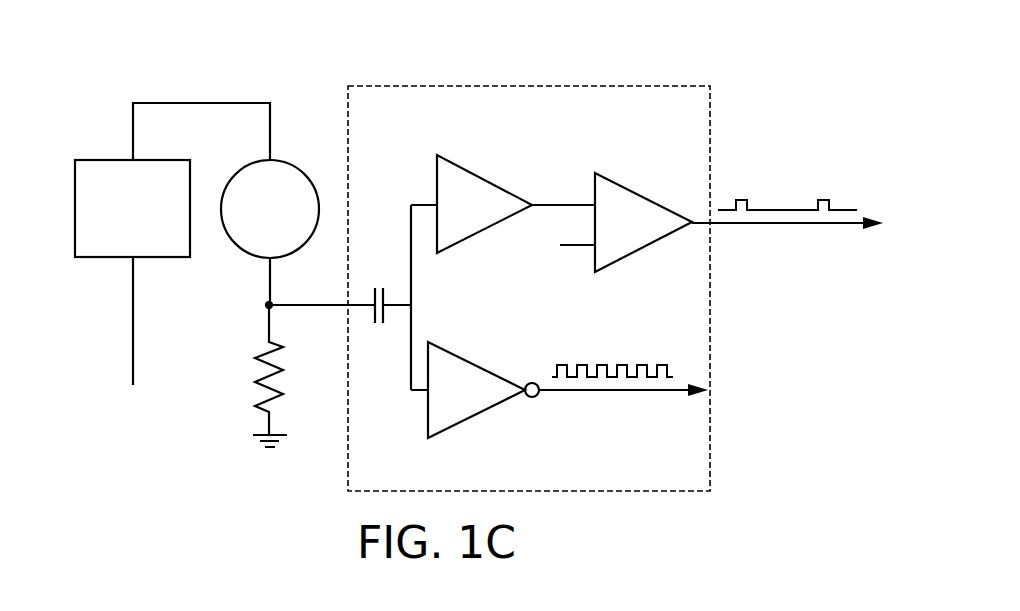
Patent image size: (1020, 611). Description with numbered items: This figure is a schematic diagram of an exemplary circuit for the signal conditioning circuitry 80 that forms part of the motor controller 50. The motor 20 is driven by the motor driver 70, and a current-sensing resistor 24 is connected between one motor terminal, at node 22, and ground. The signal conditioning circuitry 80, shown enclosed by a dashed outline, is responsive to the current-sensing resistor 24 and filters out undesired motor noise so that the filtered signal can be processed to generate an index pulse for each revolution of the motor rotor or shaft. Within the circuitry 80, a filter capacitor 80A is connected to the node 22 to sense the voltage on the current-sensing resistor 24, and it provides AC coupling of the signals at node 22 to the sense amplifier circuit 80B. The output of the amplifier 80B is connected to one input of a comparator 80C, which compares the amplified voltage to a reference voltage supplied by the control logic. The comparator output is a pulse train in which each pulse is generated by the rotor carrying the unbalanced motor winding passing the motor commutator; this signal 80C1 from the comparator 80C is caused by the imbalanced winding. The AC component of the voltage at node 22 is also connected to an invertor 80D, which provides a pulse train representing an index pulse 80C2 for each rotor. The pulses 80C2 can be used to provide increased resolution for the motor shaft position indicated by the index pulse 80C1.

The motor driver 70 is at (120, 162).
The motor 20 is at (260, 168).
The node 22 is at (268, 303).
The current-sensing resistor 24 is at (258, 378).
The motor controller 50 is at (348, 443).
The signal conditioning circuitry 80 is at (537, 58).
The filter capacitor 80A is at (376, 300).
The sense amplifier circuit 80B is at (462, 174).
The comparator 80C is at (610, 192).
The signal from comparator 80C1 is at (765, 210).
The invertor 80D is at (437, 357).
The index pulses 80C2 is at (600, 368).